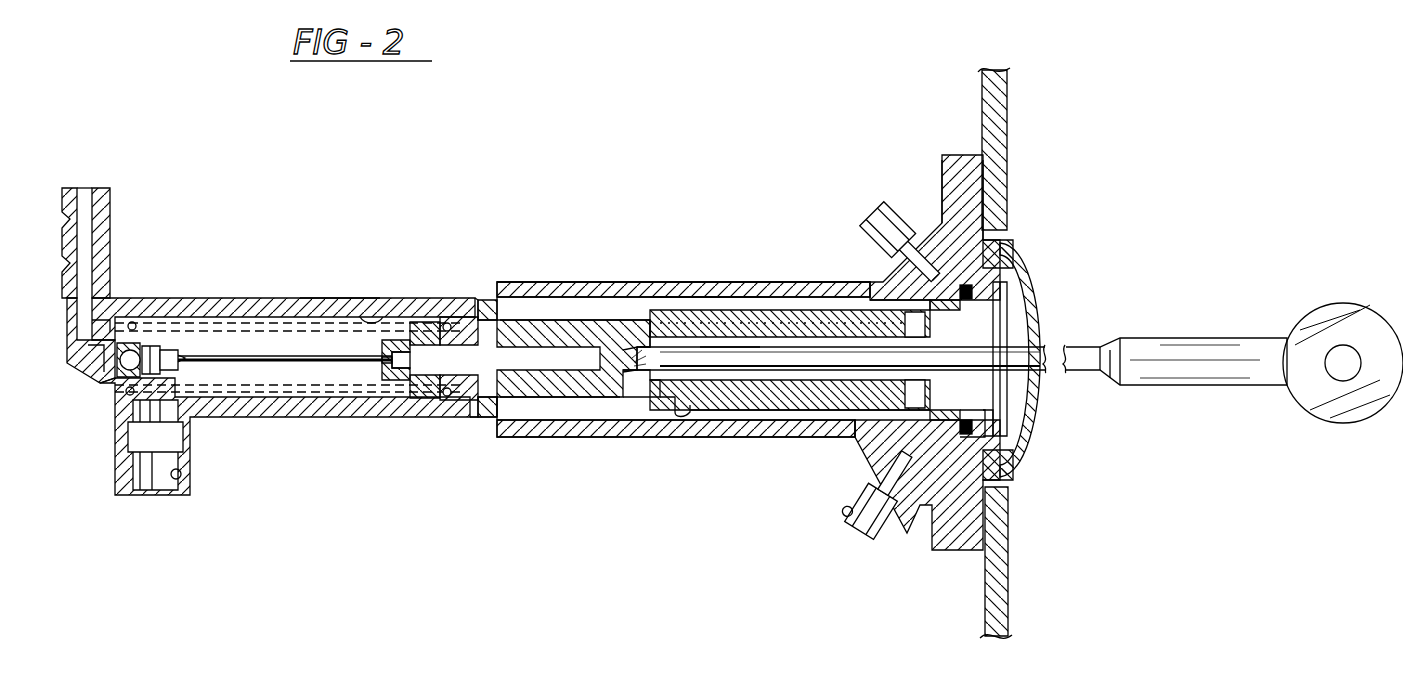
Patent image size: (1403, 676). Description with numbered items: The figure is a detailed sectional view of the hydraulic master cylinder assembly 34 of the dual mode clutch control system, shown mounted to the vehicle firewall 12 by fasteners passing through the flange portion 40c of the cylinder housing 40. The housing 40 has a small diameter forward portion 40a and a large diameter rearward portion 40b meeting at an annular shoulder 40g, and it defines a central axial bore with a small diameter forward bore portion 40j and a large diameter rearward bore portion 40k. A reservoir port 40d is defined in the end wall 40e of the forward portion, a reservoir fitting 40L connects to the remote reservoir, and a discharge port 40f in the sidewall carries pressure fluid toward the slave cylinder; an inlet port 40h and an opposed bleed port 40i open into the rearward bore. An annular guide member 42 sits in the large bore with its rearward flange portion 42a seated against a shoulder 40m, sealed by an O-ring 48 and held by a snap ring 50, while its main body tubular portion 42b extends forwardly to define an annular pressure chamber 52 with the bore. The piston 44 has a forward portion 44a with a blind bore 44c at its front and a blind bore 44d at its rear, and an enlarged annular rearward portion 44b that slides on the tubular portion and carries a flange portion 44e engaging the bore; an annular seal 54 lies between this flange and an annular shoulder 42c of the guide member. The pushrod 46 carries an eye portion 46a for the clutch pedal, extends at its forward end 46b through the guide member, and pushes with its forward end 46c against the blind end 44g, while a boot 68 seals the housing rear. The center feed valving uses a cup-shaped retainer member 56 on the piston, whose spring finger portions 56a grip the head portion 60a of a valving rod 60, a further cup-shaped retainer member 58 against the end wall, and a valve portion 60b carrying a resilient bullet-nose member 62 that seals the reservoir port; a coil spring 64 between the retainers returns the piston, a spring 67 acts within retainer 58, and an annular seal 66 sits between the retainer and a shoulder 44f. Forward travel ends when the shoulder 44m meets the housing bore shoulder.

The firewall 12 is at (1007, 130).
The master cylinder assembly 34 is at (636, 228).
The cylinder housing 40 is at (757, 282).
The small diameter forward portion 40a is at (342, 312).
The large diameter rearward portion 40b is at (690, 350).
The flange portion 40c is at (937, 222).
The reservoir port 40d is at (93, 353).
The end wall 40e is at (103, 327).
The discharge port 40f is at (140, 445).
The annular shoulder 40g is at (484, 416).
The inlet port 40h is at (883, 460).
The bleed port 40i is at (883, 238).
The small diameter forward bore portion 40j is at (372, 320).
The large diameter rearward bore portion 40k is at (752, 300).
The reservoir fitting 40L is at (108, 207).
The shoulder 40m is at (960, 290).
The annular guide member 42 is at (797, 330).
The rearward flange portion 42a is at (958, 420).
The main body tubular portion 42b is at (785, 325).
The annular shoulder 42c is at (910, 315).
The piston 44 is at (549, 320).
The forward portion 44a is at (566, 320).
The enlarged diameter annular rearward portion 44b is at (812, 410).
The blind bore 44c is at (590, 372).
The blind bore 44d is at (663, 380).
The flange portion 44e is at (860, 300).
The shoulder 44f is at (488, 300).
The blind end 44g is at (656, 345).
The shoulder 44m is at (683, 407).
The pushrod 46 is at (1050, 340).
The eye portion 46a is at (1296, 320).
The forward end 46b is at (712, 345).
The forward end 46c is at (627, 360).
The O-ring 48 is at (1025, 250).
The snap ring 50 is at (1003, 422).
The annular pressure chamber 52 is at (933, 410).
The annular seal 54 is at (915, 318).
The cup-shaped retainer member 56 is at (402, 345).
The spring finger portions 56a is at (383, 367).
The cup-shaped retainer member 58 is at (152, 340).
The valving rod 60 is at (250, 357).
The head portion 60a is at (407, 360).
The valve portion 60b is at (172, 363).
The resilient bullet-nose member 62 is at (115, 345).
The coil spring 64 is at (290, 330).
The annular seal 66 is at (470, 322).
The spring 67 is at (167, 343).
The boot 68 is at (1037, 290).